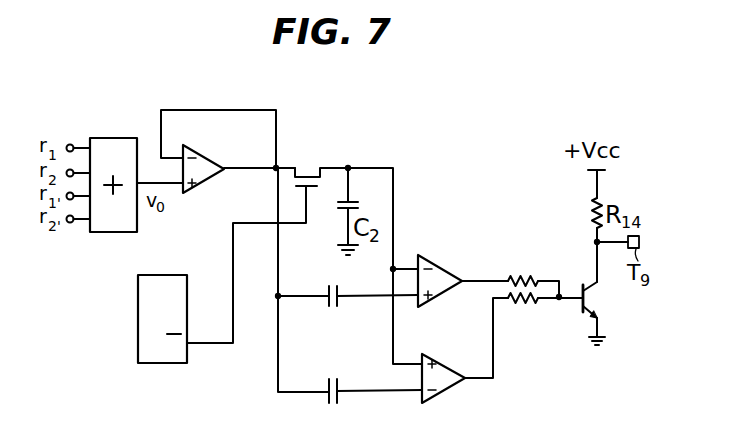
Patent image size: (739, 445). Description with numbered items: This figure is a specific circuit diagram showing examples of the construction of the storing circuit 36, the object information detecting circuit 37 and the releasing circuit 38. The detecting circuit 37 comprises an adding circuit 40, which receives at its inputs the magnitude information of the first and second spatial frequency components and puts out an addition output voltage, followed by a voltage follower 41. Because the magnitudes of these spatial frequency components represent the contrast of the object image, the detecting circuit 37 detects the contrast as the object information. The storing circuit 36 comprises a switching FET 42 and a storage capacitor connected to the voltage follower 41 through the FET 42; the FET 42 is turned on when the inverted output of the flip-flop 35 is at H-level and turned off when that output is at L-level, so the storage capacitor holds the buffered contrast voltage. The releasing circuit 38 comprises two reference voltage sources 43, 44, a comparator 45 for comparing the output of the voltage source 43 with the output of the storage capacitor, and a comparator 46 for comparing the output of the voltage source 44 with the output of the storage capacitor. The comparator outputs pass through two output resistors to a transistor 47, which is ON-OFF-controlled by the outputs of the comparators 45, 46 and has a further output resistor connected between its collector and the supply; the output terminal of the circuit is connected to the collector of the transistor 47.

The flip-flop 35 is at (163, 275).
The storing circuit 36 is at (383, 165).
The object information detecting circuit 37 is at (204, 93).
The releasing circuit 38 is at (500, 299).
The adding circuit 40 is at (112, 137).
The voltage follower 41 is at (205, 150).
The switching FET 42 is at (305, 165).
The reference voltage source 43 is at (338, 307).
The reference voltage source 44 is at (328, 378).
The comparator 45 is at (438, 263).
The comparator 46 is at (443, 357).
The transistor 47 is at (596, 297).